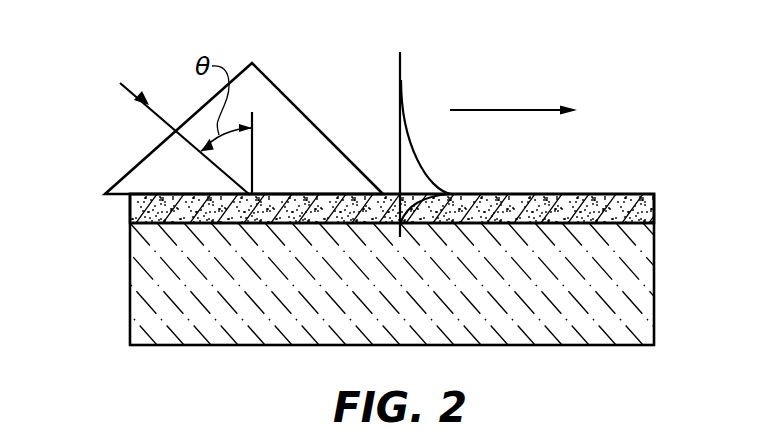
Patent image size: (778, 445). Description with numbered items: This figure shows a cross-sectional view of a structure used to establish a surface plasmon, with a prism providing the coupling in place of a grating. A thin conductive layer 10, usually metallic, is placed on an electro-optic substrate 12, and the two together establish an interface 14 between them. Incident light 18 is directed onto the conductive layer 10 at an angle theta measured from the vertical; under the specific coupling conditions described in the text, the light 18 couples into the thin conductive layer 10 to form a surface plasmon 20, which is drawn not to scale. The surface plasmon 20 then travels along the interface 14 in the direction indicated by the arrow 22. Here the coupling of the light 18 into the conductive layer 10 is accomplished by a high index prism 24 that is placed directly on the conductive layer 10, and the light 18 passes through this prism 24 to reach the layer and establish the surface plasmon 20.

The conductive layer 10 is at (622, 194).
The electro-optic substrate 12 is at (578, 293).
The interface 14 is at (633, 224).
The light 18 is at (162, 120).
The surface plasmon 20 is at (402, 67).
The arrow 22 is at (490, 110).
The high index prism 24 is at (285, 96).